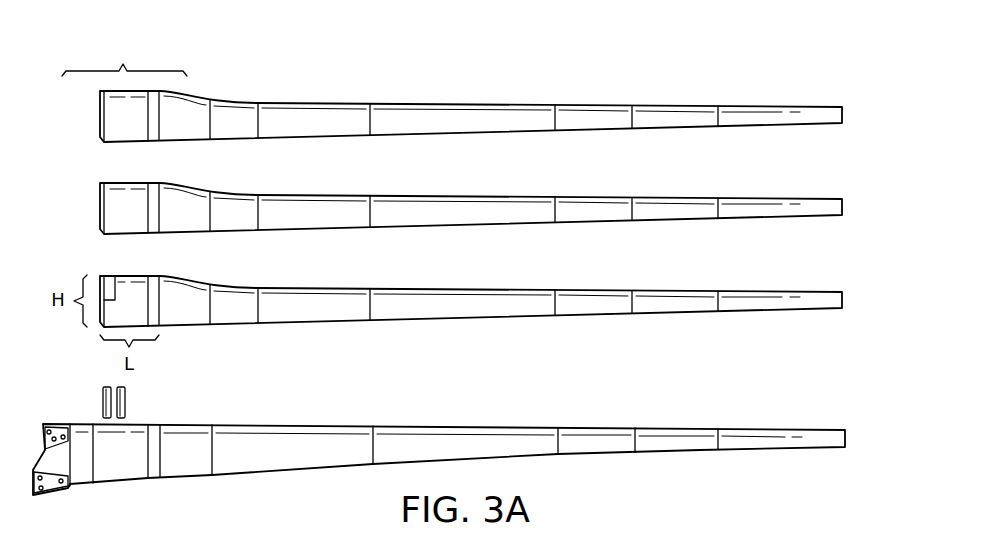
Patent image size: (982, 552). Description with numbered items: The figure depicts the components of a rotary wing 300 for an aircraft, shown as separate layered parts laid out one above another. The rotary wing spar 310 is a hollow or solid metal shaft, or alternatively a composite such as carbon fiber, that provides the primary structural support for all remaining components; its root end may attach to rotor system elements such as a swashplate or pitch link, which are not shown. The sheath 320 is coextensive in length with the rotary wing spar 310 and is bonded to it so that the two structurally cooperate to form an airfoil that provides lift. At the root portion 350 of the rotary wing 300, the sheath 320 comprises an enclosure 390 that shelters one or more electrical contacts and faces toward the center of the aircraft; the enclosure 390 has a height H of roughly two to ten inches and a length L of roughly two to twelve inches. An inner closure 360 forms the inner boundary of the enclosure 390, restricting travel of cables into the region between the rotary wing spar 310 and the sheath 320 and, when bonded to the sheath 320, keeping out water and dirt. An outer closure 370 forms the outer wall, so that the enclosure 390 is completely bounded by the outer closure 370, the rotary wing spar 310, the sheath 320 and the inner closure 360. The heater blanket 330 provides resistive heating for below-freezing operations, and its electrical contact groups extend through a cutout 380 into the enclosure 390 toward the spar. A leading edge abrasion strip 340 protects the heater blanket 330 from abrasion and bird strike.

The rotary wing 300 is at (602, 67).
The rotary wing spar 310 is at (812, 428).
The sheath 320 is at (812, 290).
The heater blanket 330 is at (812, 197).
The leading edge abrasion strip 340 is at (812, 105).
The root portion 350 is at (124, 54).
The inner closure 360 is at (126, 410).
The outer closure 370 is at (101, 399).
The cutout 380 is at (113, 293).
The enclosure 390 is at (139, 298).